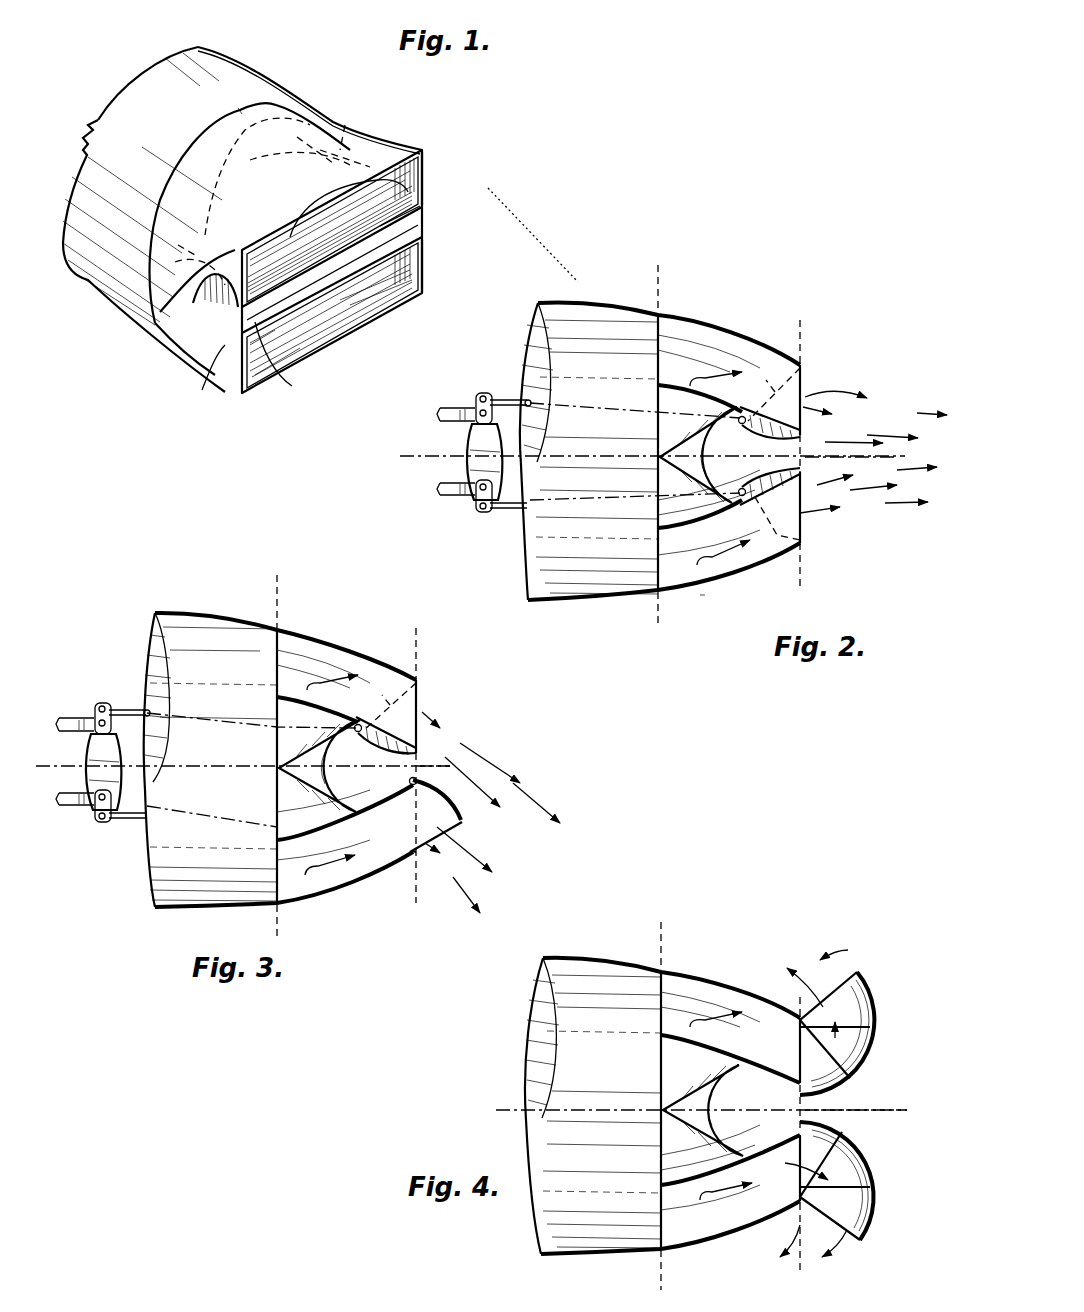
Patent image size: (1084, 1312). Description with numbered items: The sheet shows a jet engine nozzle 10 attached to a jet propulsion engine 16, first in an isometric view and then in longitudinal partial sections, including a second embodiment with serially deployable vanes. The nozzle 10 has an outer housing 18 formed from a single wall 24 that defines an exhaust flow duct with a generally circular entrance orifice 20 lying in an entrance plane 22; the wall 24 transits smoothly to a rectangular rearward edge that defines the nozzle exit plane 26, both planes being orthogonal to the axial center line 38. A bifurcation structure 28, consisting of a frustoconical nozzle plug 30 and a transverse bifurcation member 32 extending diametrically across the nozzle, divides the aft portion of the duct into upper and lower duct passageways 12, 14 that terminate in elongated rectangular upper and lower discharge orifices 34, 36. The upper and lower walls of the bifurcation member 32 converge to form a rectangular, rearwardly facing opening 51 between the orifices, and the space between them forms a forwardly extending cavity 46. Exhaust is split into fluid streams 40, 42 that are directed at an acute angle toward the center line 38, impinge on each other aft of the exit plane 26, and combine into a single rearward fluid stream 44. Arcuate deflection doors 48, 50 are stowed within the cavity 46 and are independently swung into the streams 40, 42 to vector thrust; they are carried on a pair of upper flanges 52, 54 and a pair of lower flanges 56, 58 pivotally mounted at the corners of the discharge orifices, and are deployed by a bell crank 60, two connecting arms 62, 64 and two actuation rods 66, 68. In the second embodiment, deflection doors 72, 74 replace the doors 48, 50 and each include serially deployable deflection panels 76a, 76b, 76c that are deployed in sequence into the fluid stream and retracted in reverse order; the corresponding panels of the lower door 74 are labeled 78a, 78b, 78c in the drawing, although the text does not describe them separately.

In FIG. 1, the nozzle 10 is at (365, 125).
In FIG. 2, the nozzle 10 is at (708, 590).
In FIG. 3, the nozzle 10 is at (325, 633).
In FIG. 4, the nozzle 10 is at (700, 963).
In FIG. 2, the upper duct passageway 12 is at (690, 345).
In FIG. 3, the upper duct passageway 12 is at (365, 655).
In FIG. 4, the upper duct passageway 12 is at (702, 1000).
In FIG. 2, the lower duct passageway 14 is at (757, 567).
In FIG. 3, the lower duct passageway 14 is at (376, 874).
In FIG. 4, the lower duct passageway 14 is at (732, 1225).
In FIG. 1, the jet propulsion engine 16 is at (205, 52).
In FIG. 2, the jet propulsion engine 16 is at (555, 598).
In FIG. 3, the jet propulsion engine 16 is at (200, 616).
In FIG. 4, the jet propulsion engine 16 is at (580, 958).
In FIG. 1, the outer housing 18 is at (178, 243).
In FIG. 2, the outer housing 18 is at (770, 350).
In FIG. 3, the outer housing 18 is at (400, 860).
In FIG. 4, the outer housing 18 is at (742, 996).
In FIG. 1, the entrance orifice 20 is at (272, 105).
In FIG. 2, the entrance orifice 20 is at (656, 330).
In FIG. 3, the entrance orifice 20 is at (275, 640).
In FIG. 4, the entrance orifice 20 is at (658, 1010).
In FIG. 1, the entrance plane 22 is at (240, 110).
In FIG. 2, the entrance plane 22 is at (658, 628).
In FIG. 3, the entrance plane 22 is at (280, 580).
In FIG. 4, the entrance plane 22 is at (660, 925).
In FIG. 2, the housing wall 24 is at (737, 331).
In FIG. 3, the housing wall 24 is at (300, 897).
In FIG. 4, the housing wall 24 is at (674, 970).
In FIG. 2, the nozzle exit plane 26 is at (803, 575).
In FIG. 3, the nozzle exit plane 26 is at (418, 632).
In FIG. 4, the nozzle exit plane 26 is at (803, 1270).
In FIG. 2, the bifurcation structure 28 is at (660, 470).
In FIG. 3, the bifurcation structure 28 is at (272, 783).
In FIG. 4, the bifurcation structure 28 is at (665, 1140).
In FIG. 1, the nozzle plug 30 is at (315, 125).
In FIG. 2, the nozzle plug 30 is at (656, 390).
In FIG. 3, the nozzle plug 30 is at (275, 704).
In FIG. 4, the nozzle plug 30 is at (659, 1055).
In FIG. 1, the transverse bifurcation member 32 is at (380, 140).
In FIG. 2, the transverse bifurcation member 32 is at (660, 452).
In FIG. 3, the transverse bifurcation member 32 is at (280, 762).
In FIG. 4, the transverse bifurcation member 32 is at (676, 1102).
In FIG. 1, the upper discharge orifice 34 is at (428, 165).
In FIG. 2, the upper discharge orifice 34 is at (812, 394).
In FIG. 3, the upper discharge orifice 34 is at (425, 722).
In FIG. 4, the upper discharge orifice 34 is at (797, 1050).
In FIG. 1, the lower discharge orifice 36 is at (320, 325).
In FIG. 2, the lower discharge orifice 36 is at (803, 540).
In FIG. 3, the lower discharge orifice 36 is at (416, 858).
In FIG. 4, the lower discharge orifice 36 is at (797, 1196).
In FIG. 2, the axial center line 38 is at (418, 456).
In FIG. 3, the axial center line 38 is at (60, 766).
In FIG. 4, the axial center line 38 is at (510, 1110).
In FIG. 2, the upper fluid stream 40 is at (716, 378).
In FIG. 3, the upper fluid stream 40 is at (329, 688).
In FIG. 4, the upper fluid stream 40 is at (770, 982).
In FIG. 2, the lower fluid stream 42 is at (720, 558).
In FIG. 3, the lower fluid stream 42 is at (330, 871).
In FIG. 4, the lower fluid stream 42 is at (780, 1278).
In FIG. 2, the combined fluid stream 44 is at (890, 442).
In FIG. 3, the combined fluid stream 44 is at (535, 800).
In FIG. 1, the cavity 46 is at (200, 300).
In FIG. 2, the cavity 46 is at (714, 470).
In FIG. 3, the cavity 46 is at (348, 782).
In FIG. 4, the cavity 46 is at (725, 1108).
In FIG. 1, the upper deflection door 48 is at (425, 212).
In FIG. 2, the upper deflection door 48 is at (746, 427).
In FIG. 3, the upper deflection door 48 is at (372, 745).
In FIG. 1, the lower deflection door 50 is at (292, 386).
In FIG. 2, the lower deflection door 50 is at (750, 466).
In FIG. 3, the lower deflection door 50 is at (458, 812).
In FIG. 2, the rearwardly facing opening 51 is at (803, 456).
In FIG. 3, the rearwardly facing opening 51 is at (425, 757).
In FIG. 4, the rearwardly facing opening 51 is at (856, 1099).
In FIG. 1, the upper flange 52 is at (162, 310).
In FIG. 2, the upper flange 52 is at (762, 360).
In FIG. 3, the upper flange 52 is at (430, 683).
In FIG. 1, the upper flange 54 is at (425, 182).
In FIG. 1, the lower flange 56 is at (228, 370).
In FIG. 2, the lower flange 56 is at (778, 542).
In FIG. 3, the lower flange 56 is at (465, 822).
In FIG. 1, the lower flange 58 is at (426, 262).
In FIG. 2, the bell crank 60 is at (468, 470).
In FIG. 3, the bell crank 60 is at (88, 780).
In FIG. 2, the connecting arm 62 is at (500, 400).
In FIG. 3, the connecting arm 62 is at (125, 710).
In FIG. 2, the connecting arm 64 is at (494, 508).
In FIG. 3, the connecting arm 64 is at (130, 818).
In FIG. 2, the actuation rod 66 is at (452, 408).
In FIG. 3, the actuation rod 66 is at (72, 718).
In FIG. 2, the actuation rod 68 is at (452, 498).
In FIG. 3, the actuation rod 68 is at (72, 806).
In FIG. 4, the deflection door 72 is at (882, 1018).
In FIG. 4, the deflection door 74 is at (880, 1198).
In FIG. 4, the deflection panel 76a is at (862, 972).
In FIG. 4, the deflection panel 76b is at (874, 1040).
In FIG. 4, the deflection panel 76c is at (855, 1080).
In FIG. 4, the lower door surface 78a is at (866, 1240).
In FIG. 4, the lower door surface 78b is at (875, 1178).
In FIG. 4, the lower door surface 78c is at (852, 1125).